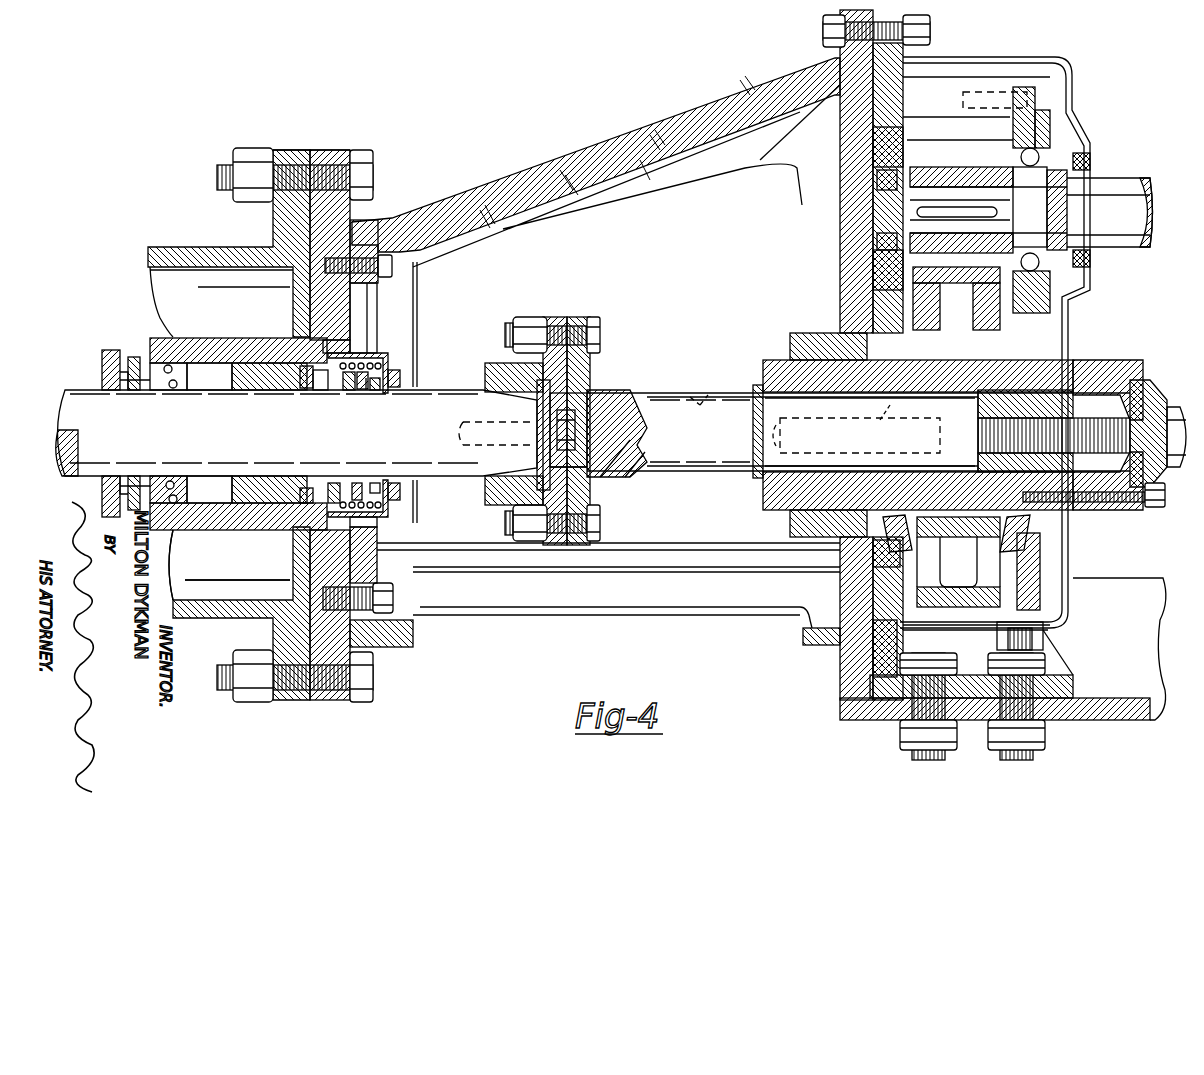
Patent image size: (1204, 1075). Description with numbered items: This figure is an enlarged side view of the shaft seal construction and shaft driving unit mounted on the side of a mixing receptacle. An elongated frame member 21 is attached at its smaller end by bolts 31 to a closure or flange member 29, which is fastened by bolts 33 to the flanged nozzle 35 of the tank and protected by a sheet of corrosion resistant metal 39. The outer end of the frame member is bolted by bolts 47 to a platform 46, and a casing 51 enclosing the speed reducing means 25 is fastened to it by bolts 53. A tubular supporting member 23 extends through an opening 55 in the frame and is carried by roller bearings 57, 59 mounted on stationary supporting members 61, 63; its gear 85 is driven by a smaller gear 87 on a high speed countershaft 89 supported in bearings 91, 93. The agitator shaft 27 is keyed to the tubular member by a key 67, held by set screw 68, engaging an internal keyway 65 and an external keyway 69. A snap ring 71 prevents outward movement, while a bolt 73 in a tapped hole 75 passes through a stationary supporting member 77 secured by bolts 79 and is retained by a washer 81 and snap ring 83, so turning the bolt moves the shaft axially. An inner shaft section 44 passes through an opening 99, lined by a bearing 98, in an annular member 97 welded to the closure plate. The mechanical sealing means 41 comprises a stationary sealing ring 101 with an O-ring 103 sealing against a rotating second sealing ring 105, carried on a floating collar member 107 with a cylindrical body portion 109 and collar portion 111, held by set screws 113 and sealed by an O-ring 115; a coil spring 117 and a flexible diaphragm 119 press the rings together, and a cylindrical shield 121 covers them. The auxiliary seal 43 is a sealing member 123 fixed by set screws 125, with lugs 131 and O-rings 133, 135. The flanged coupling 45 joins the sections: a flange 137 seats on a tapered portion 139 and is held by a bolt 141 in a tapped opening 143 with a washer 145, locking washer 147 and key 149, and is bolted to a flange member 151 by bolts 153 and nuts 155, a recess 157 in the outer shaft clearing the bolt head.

The elongated frame member 21 is at (650, 118).
The tubular supporting member 23 is at (770, 508).
The speed reducing means 25 is at (1005, 45).
The agitator shaft 27 is at (735, 435).
The closure or flange member 29 is at (330, 150).
The bolts 31 is at (393, 270).
The bolts 33 is at (373, 168).
The flanged nozzle 35 is at (185, 247).
The sheet of corrosion resistant metal 39 is at (310, 300).
The mechanical sealing means 41 is at (408, 334).
The auxiliary seal 43 is at (121, 336).
The inner shaft section 44 is at (247, 445).
The flanged coupling 45 is at (569, 314).
The supporting member or platform 46 is at (1110, 698).
The bolts 47 is at (1000, 755).
The casing 51 is at (1073, 80).
The bolts 53 is at (930, 22).
The opening 55 is at (795, 520).
The roller bearing 57 is at (905, 540).
The roller bearing 59 is at (1030, 535).
The stationary supporting member 61 is at (885, 555).
The stationary supporting member 63 is at (1040, 598).
The internal keyway 65 is at (1020, 390).
The key 67 is at (792, 355).
The set screw 68 is at (856, 435).
The external keyway 69 is at (700, 395).
The snap ring 71 is at (755, 386).
The threaded member or bolt 73 is at (1166, 488).
The axially bored and tapped hole 75 is at (892, 420).
The stationary supporting member 77 is at (1140, 365).
The bolts 79 is at (1155, 507).
The washer 81 is at (1172, 407).
The snap ring 83 is at (1135, 415).
The driving member or gear 85 is at (983, 610).
The gear 87 is at (937, 167).
The high speed countershaft 89 is at (1108, 190).
The bearing 91 is at (877, 180).
The bearing 93 is at (1021, 155).
The annular member 97 is at (258, 343).
The bearing 98 is at (262, 530).
The opening 99 is at (207, 530).
The stationary sealing ring 101 is at (300, 388).
The O-ring 103 is at (318, 390).
The second sealing ring 105 is at (335, 483).
The floating seat or collar member 107 is at (390, 370).
The cylindrical body portion 109 is at (349, 390).
The collar portion 111 is at (400, 378).
The set screws 113 is at (385, 372).
The O-ring 115 is at (378, 390).
The coil spring 117 is at (363, 358).
The flexible diaphragm or bellows 119 is at (365, 390).
The cylindrical cover or shield 121 is at (375, 518).
The sealing member 123 is at (108, 350).
The set screws 125 is at (125, 390).
The lugs 131 is at (134, 357).
The O-ring 133 is at (183, 363).
The O-ring 135 is at (172, 476).
The flange 137 is at (550, 317).
The tapered portion 139 is at (490, 495).
The bolt 141 is at (575, 428).
The tapped longitudinally extending opening 143 is at (463, 444).
The washer 145 is at (537, 445).
The locking washer 147 is at (640, 440).
The key 149 is at (510, 365).
The flange member 151 is at (585, 318).
The bolts 153 is at (600, 333).
The nuts 155 is at (525, 317).
The recess 157 is at (585, 470).